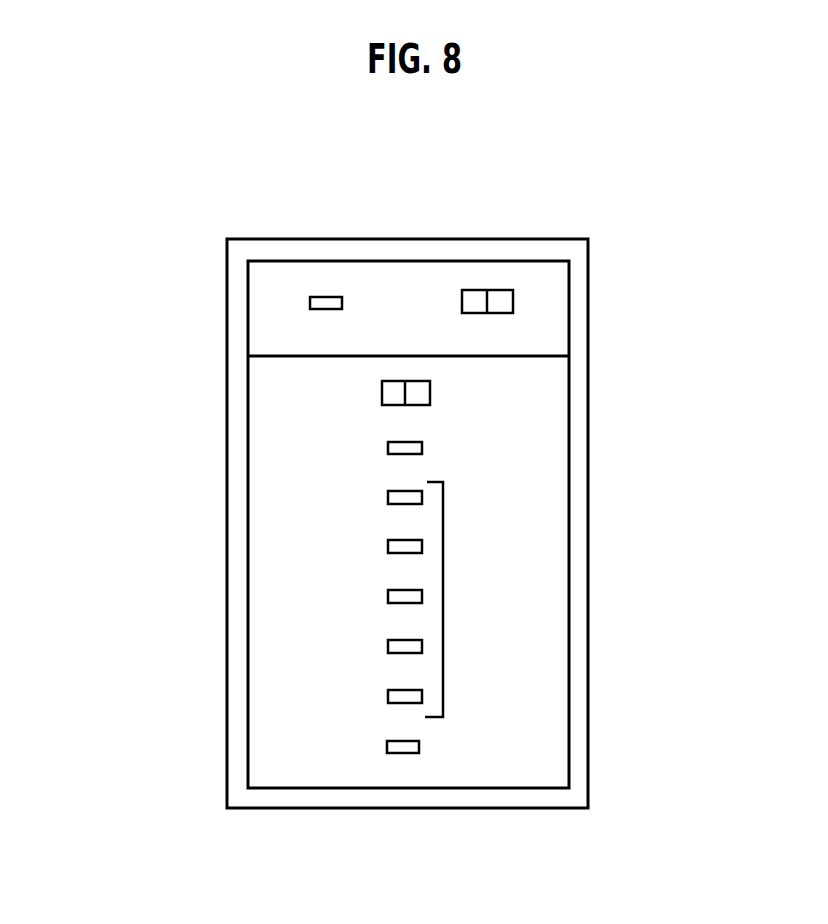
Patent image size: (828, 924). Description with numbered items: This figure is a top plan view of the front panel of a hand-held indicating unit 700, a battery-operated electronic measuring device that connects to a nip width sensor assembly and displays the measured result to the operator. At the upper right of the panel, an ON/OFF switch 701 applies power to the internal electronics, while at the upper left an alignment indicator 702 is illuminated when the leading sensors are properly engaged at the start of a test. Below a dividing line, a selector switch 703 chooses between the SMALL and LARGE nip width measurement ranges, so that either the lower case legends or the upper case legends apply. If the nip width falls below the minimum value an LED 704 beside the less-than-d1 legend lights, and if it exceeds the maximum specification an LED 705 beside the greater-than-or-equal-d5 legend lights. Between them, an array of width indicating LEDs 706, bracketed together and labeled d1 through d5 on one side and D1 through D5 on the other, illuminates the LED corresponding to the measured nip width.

The hand-held indicating unit 700 is at (548, 212).
The ON/OFF switch 701 is at (513, 301).
The alignment indicator 702 is at (326, 297).
The selector switch 703 is at (382, 382).
The below-minimum indicator LED 704 is at (420, 441).
The above-maximum indicator LED 705 is at (401, 754).
The width indicating LEDs 706 is at (405, 540).